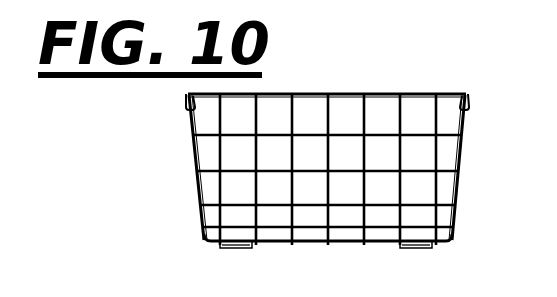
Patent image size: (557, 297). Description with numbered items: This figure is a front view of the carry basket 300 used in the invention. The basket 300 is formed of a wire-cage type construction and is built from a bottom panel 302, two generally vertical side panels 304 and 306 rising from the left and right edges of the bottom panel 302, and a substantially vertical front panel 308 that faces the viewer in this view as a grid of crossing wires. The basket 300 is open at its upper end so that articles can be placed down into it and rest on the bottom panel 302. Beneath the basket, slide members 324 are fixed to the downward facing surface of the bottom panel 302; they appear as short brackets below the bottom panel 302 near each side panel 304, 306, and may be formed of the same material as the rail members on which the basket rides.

The basket 300 is at (324, 157).
The bottom panel 302 is at (352, 246).
The side panel 304 is at (203, 193).
The side panel 306 is at (462, 170).
The front panel 308 is at (398, 157).
The slide members 324 is at (238, 248).